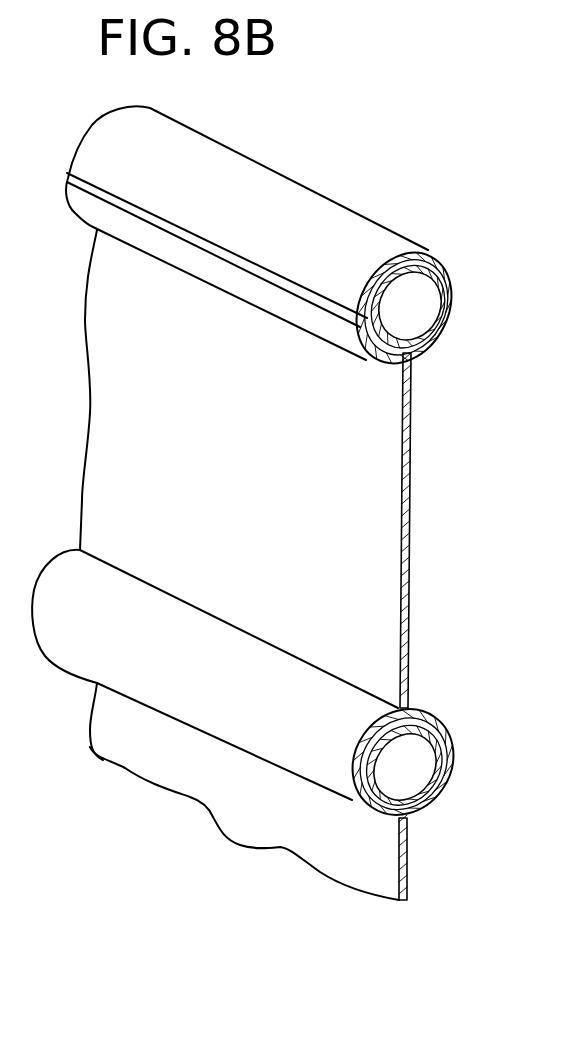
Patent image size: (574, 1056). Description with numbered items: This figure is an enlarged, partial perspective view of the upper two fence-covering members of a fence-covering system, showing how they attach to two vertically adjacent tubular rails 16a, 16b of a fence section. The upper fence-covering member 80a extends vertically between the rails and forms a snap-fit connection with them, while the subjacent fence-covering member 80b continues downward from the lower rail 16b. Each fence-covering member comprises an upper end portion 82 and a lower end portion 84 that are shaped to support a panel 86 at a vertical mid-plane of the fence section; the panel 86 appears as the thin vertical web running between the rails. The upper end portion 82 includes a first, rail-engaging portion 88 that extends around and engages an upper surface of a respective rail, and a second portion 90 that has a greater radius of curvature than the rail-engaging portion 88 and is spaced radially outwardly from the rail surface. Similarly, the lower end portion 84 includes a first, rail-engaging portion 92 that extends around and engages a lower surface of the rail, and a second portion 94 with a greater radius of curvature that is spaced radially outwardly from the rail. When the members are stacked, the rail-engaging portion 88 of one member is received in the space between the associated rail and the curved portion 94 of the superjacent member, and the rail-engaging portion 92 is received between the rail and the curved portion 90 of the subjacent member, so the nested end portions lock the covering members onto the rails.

The rail 16a is at (440, 322).
The rail 16b is at (443, 723).
The fence-covering member 80a is at (414, 532).
The fence-covering member 80b is at (413, 870).
The upper end portion 82 is at (310, 318).
The lower end portion 84 is at (288, 750).
The panel 86 is at (412, 482).
The rail-engaging portion 88 is at (398, 243).
The second portion 90 is at (330, 338).
The rail-engaging portion 92 is at (370, 817).
The second portion 94 is at (325, 717).